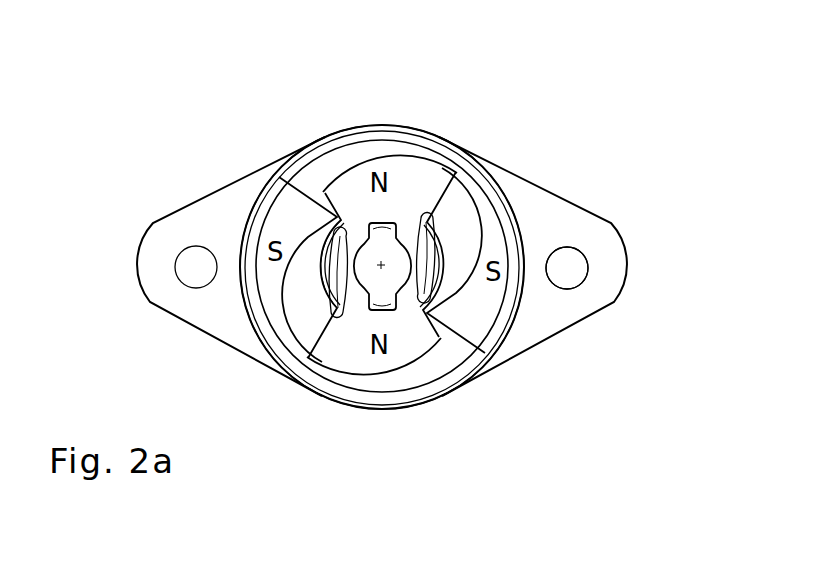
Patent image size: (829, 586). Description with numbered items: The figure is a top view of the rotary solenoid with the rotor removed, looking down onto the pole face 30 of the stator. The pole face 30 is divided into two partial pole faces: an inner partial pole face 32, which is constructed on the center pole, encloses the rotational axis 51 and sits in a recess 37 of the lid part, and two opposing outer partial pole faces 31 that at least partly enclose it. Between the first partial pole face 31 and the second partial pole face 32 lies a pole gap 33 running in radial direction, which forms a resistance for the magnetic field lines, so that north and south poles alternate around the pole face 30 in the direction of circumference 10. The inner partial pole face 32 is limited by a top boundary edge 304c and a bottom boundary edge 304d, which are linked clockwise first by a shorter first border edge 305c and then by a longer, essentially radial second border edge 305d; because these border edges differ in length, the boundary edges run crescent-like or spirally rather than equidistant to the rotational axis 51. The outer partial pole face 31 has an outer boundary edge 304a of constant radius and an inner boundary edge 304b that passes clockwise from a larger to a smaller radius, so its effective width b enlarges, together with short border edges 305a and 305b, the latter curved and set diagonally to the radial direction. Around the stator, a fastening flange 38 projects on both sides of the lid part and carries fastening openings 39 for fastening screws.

The direction of circumference 10 is at (403, 487).
The pole face 30 is at (433, 126).
The outer partial pole face 31 is at (500, 198).
The inner partial pole face 32 is at (412, 355).
The pole gap 33 is at (470, 306).
The recess 37 is at (437, 370).
The fastening flange 38 is at (577, 222).
The fastening openings 39 is at (580, 265).
The rotational axis 51 is at (380, 265).
The outer boundary edge 304a is at (305, 228).
The inner boundary edge 304b is at (485, 190).
The top boundary edge 304c is at (368, 157).
The bottom boundary edge 304d is at (368, 377).
The border edge 305a is at (300, 183).
The border edge 305b is at (457, 172).
The first border edge 305c is at (315, 178).
The second border edge 305d is at (440, 205).
The effective width b is at (300, 322).